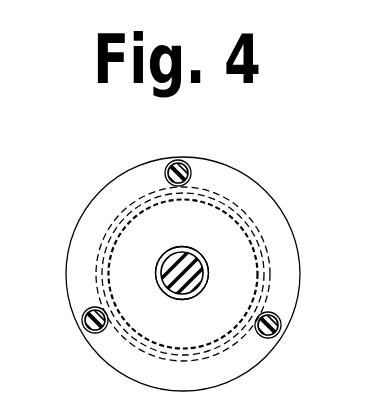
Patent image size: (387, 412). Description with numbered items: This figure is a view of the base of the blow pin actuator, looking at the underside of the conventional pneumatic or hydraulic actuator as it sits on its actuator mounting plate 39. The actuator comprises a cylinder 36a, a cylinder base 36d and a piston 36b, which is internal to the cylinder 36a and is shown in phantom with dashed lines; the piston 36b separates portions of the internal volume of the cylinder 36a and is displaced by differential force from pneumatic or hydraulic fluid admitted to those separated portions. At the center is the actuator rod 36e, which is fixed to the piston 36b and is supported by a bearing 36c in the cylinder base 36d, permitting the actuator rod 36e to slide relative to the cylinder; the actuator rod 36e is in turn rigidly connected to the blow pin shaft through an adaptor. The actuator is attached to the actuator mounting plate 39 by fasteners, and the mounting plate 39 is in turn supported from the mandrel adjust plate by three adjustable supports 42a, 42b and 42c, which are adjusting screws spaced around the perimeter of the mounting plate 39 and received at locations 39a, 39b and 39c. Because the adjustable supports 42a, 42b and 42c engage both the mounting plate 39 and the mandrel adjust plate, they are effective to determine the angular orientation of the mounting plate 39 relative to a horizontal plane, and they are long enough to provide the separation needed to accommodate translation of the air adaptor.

The actuator mounting plate 39 is at (98, 207).
The mounting hole 39a is at (170, 164).
The mounting hole 39b is at (86, 311).
The mounting hole 39c is at (275, 336).
The adjustable support 42a is at (188, 165).
The adjustable support 42b is at (86, 329).
The adjustable support 42c is at (279, 317).
The cylinder 36a is at (213, 234).
The piston 36b is at (215, 232).
The bearing 36c is at (207, 265).
The cylinder base 36d is at (137, 200).
The actuator rod 36e is at (157, 262).